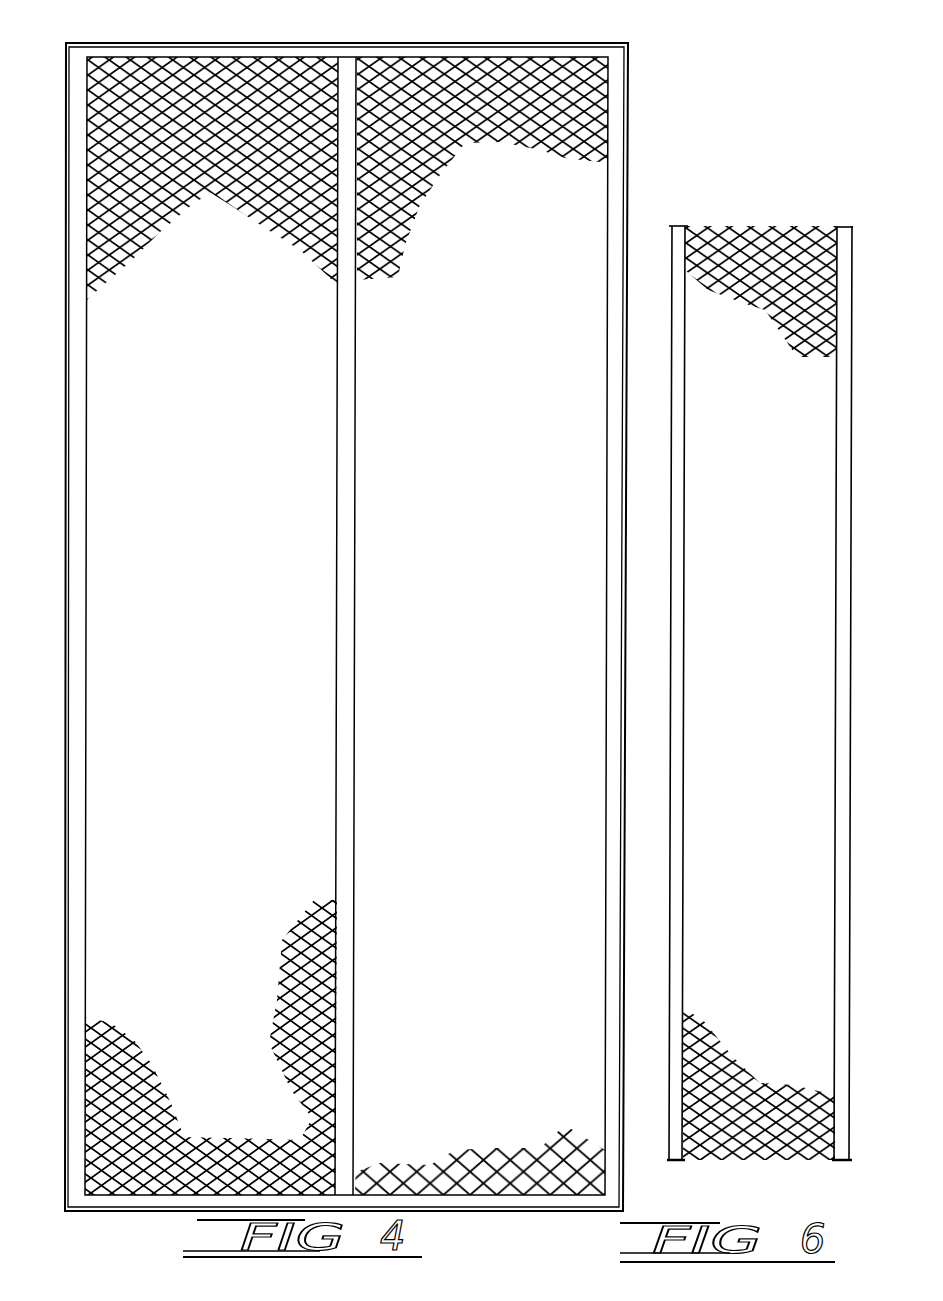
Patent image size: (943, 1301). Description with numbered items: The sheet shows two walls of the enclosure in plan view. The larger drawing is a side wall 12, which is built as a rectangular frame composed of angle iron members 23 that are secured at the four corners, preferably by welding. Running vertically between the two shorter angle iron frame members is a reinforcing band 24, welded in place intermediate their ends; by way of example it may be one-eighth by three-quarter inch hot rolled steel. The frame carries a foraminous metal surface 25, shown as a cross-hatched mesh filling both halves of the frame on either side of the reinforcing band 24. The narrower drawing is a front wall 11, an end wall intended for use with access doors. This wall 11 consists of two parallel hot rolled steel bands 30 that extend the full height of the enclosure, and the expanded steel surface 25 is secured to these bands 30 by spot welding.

In FIG. 6, the front wall 11 is at (823, 443).
In FIG. 4, the side wall 12 is at (587, 318).
In FIG. 4, the angle iron members 23 is at (208, 46).
In FIG. 4, the reinforcing band 24 is at (349, 664).
In FIG. 4, the foraminous metal surface 25 is at (600, 157).
In FIG. 6, the foraminous metal surface 25 is at (793, 233).
In FIG. 6, the hot rolled steel bands 30 is at (672, 579).